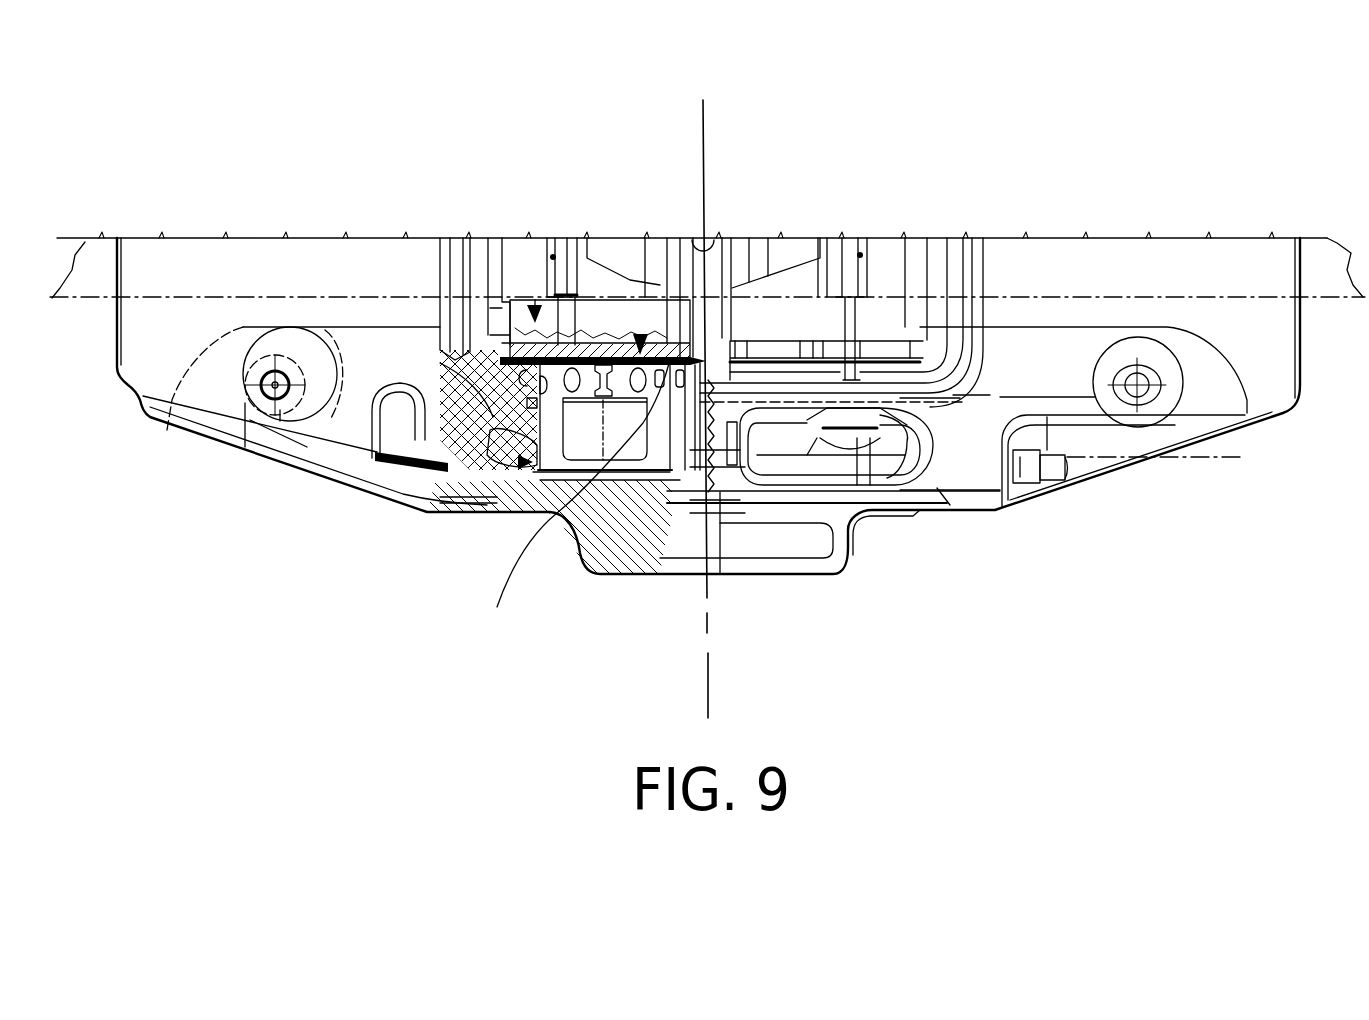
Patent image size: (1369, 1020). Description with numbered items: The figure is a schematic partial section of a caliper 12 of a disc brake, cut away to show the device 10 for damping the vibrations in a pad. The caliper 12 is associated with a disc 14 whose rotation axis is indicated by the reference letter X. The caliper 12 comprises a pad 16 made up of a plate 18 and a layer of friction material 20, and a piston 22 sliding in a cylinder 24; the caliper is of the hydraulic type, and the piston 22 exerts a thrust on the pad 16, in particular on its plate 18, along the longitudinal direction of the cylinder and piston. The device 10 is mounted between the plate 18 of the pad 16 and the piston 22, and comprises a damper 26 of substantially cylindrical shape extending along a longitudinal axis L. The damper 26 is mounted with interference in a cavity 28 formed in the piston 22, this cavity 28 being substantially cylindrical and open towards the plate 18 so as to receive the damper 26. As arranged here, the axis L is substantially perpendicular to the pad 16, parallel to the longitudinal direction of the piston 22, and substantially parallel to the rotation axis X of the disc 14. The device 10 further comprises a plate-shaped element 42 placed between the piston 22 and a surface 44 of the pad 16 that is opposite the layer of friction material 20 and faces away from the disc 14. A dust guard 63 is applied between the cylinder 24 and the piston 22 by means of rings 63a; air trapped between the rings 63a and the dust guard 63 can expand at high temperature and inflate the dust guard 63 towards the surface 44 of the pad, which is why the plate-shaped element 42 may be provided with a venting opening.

The device for damping vibrations 10 is at (641, 334).
The caliper 12 is at (940, 488).
The disc 14 is at (897, 260).
The pad 16 is at (530, 237).
The plate 18 is at (528, 380).
The layer of friction material 20 is at (790, 312).
The piston 22 is at (705, 400).
The cylinder 24 is at (485, 495).
The damper 26 is at (615, 425).
The cavity 28 is at (695, 480).
The plate-shaped element 42 is at (548, 395).
The surface of the pad 44 is at (535, 405).
The dust guard 63 is at (713, 292).
The rings 63a is at (713, 385).
The longitudinal axis L is at (579, 504).
The rotation axis of the disc X is at (704, 155).